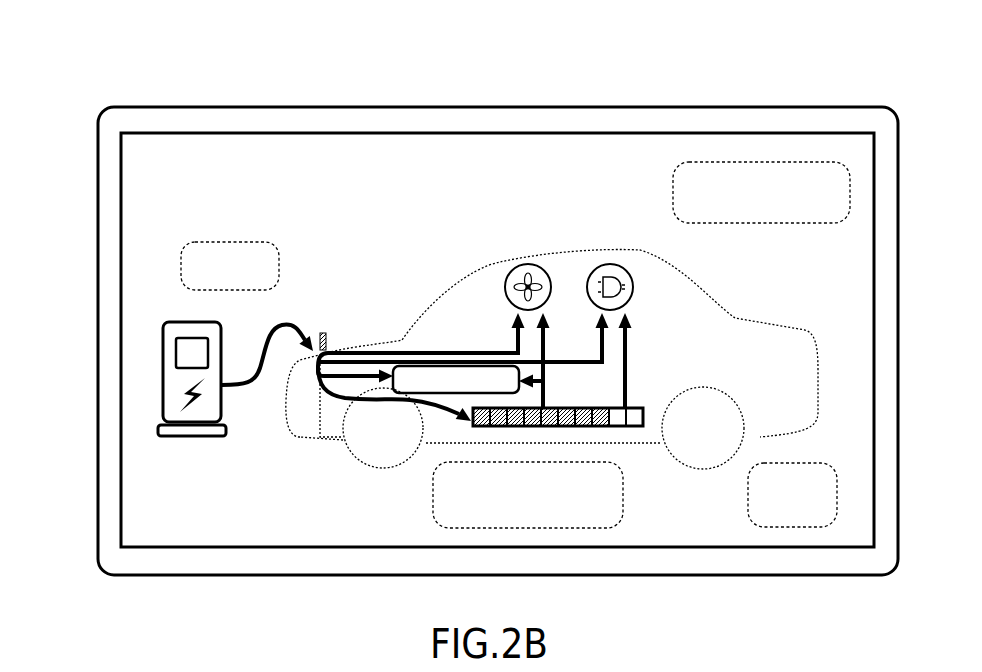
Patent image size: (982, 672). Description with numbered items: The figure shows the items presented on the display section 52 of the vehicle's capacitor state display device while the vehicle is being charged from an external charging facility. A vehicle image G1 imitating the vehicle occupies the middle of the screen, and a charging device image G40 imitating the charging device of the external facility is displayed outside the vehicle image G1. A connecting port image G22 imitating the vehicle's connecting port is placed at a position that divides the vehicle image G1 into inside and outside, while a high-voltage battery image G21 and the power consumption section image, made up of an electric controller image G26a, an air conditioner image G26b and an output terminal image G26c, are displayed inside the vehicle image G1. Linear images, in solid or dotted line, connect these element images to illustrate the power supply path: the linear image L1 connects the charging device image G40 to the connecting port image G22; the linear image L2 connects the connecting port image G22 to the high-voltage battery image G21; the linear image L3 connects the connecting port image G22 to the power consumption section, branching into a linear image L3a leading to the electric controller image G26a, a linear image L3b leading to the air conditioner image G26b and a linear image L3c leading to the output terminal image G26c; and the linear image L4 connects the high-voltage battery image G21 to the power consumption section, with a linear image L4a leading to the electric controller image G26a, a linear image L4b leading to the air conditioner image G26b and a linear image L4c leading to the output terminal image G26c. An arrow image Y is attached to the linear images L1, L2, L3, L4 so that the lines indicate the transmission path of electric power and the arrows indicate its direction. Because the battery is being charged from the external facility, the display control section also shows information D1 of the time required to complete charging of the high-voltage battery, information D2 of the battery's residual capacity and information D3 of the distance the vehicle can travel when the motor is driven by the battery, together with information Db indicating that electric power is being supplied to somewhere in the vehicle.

The display section 52 is at (168, 106).
The charging device image G40 is at (163, 309).
The information indicating that electric power is being supplied Db is at (240, 242).
The connecting port image G22 is at (313, 330).
The linear image L1 is at (244, 393).
The linear image L2 is at (320, 405).
The linear image L3 is at (463, 213).
The linear image L3a is at (355, 353).
The linear image L3b is at (428, 353).
The linear image L3c is at (395, 353).
The linear image L4 is at (700, 325).
The linear image L4a is at (543, 393).
The linear image L4b is at (543, 374).
The linear image L4c is at (627, 396).
The vehicle image G1 is at (576, 240).
The electric controller image G26a is at (472, 353).
The air conditioner image G26b is at (518, 264).
The output terminal image G26c is at (614, 262).
The arrow image Y is at (543, 265).
The information of time required for completing charging D1 is at (768, 160).
The information of the residual capacity D2 is at (543, 530).
The information of a travelable distance D3 is at (783, 528).
The high-voltage battery image G21 is at (614, 427).